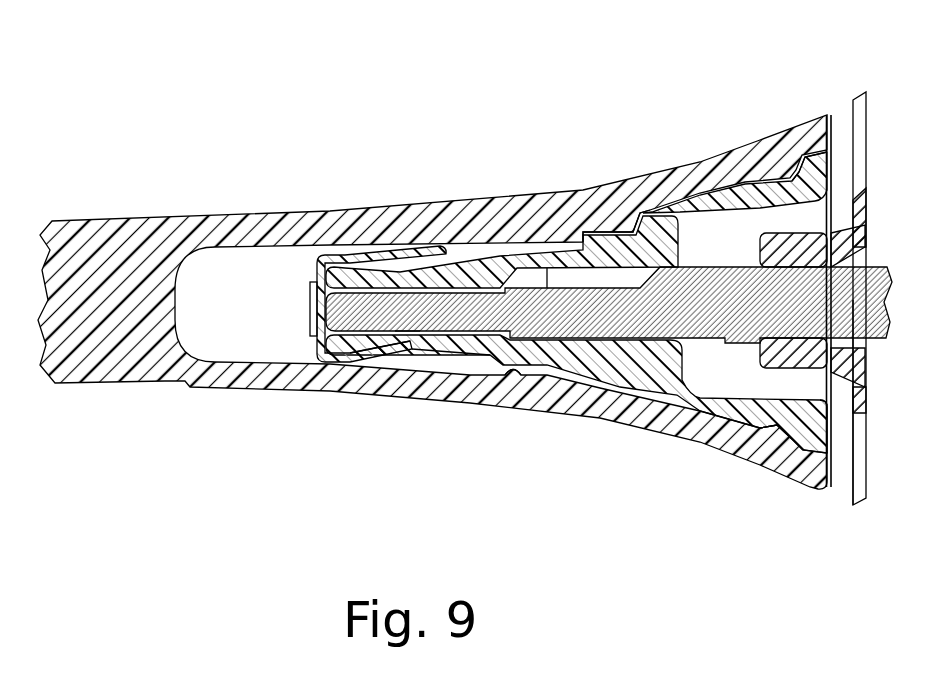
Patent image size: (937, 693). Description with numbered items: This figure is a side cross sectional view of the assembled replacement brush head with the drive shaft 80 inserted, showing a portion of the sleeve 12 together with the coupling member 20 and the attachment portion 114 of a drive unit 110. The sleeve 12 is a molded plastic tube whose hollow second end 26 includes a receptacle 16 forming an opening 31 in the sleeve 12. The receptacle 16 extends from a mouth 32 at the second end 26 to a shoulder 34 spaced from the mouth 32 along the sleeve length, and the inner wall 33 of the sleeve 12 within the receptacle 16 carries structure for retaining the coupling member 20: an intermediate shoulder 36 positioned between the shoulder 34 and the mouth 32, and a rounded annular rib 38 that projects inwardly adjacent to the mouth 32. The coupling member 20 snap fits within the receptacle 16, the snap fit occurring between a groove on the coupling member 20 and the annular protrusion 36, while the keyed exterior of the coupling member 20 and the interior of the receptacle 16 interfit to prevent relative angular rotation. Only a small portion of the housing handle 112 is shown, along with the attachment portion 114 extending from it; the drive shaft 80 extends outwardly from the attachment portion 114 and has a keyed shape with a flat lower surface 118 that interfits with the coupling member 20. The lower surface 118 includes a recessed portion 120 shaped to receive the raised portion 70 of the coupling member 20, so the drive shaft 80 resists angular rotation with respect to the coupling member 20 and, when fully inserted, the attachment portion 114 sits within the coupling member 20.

The sleeve 12 is at (83, 258).
The receptacle 16 is at (722, 183).
The coupling member 20 is at (633, 366).
The second end 26 is at (828, 113).
The opening 31 is at (817, 457).
The mouth 32 is at (828, 172).
The inner wall 33 is at (515, 372).
The shoulder 34 is at (318, 272).
The intermediate shoulder 36 is at (637, 217).
The rounded annular rib 38 is at (774, 430).
The raised portion 70 is at (430, 336).
The drive shaft 80 is at (582, 324).
The drive unit 110 is at (861, 507).
The housing handle 112 is at (864, 120).
The attachment portion 114 is at (793, 367).
The lower surface 118 is at (407, 325).
The recessed portion 120 is at (382, 322).